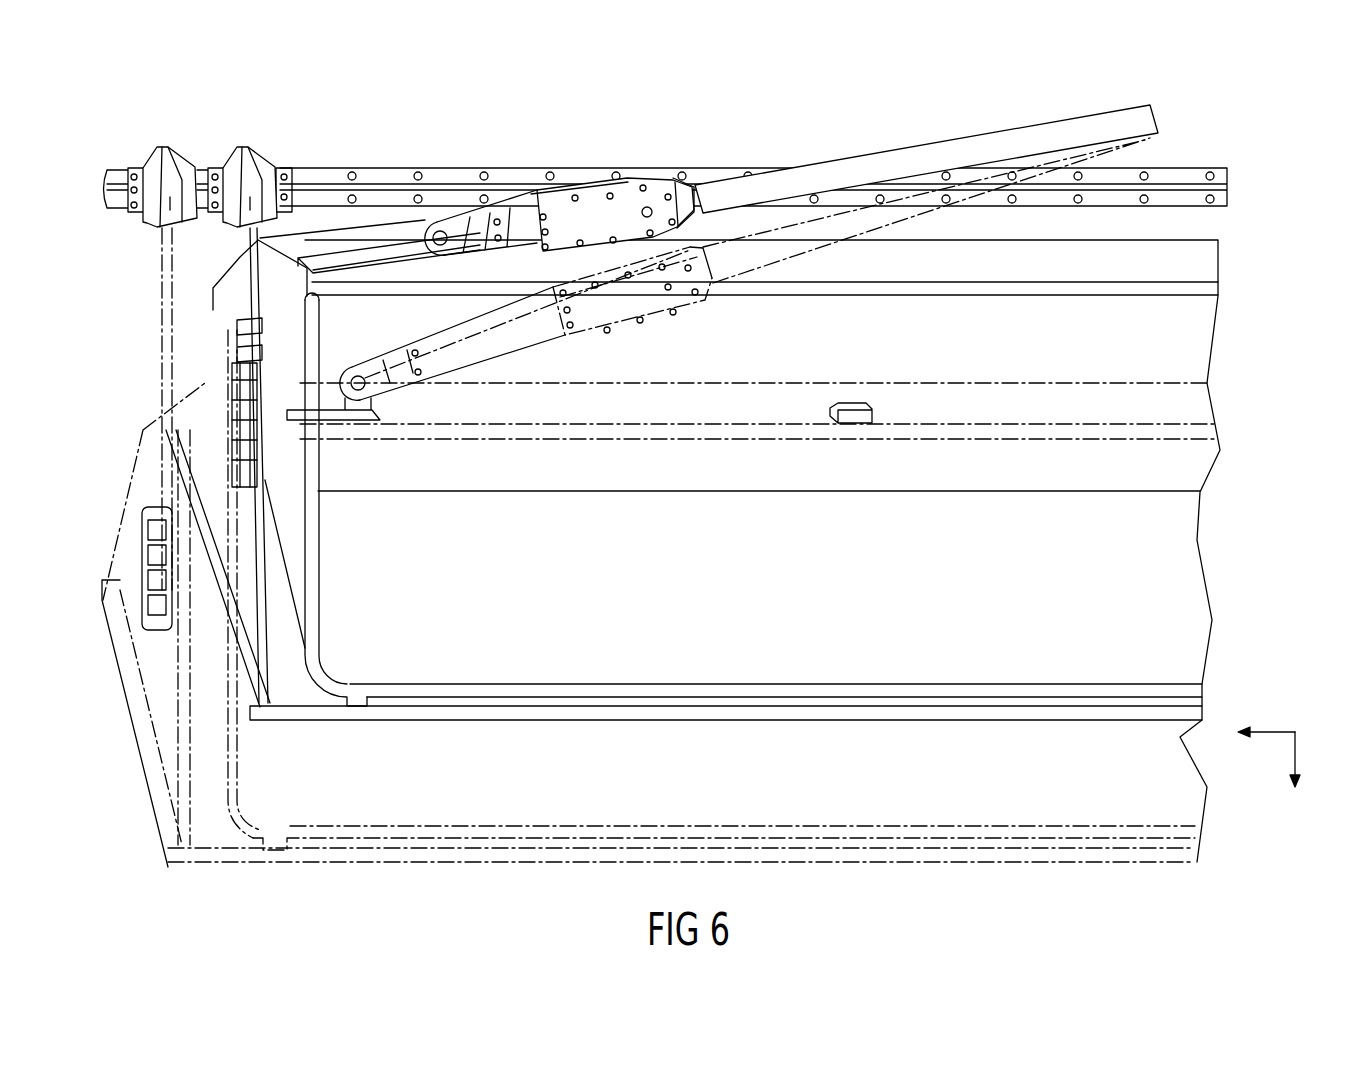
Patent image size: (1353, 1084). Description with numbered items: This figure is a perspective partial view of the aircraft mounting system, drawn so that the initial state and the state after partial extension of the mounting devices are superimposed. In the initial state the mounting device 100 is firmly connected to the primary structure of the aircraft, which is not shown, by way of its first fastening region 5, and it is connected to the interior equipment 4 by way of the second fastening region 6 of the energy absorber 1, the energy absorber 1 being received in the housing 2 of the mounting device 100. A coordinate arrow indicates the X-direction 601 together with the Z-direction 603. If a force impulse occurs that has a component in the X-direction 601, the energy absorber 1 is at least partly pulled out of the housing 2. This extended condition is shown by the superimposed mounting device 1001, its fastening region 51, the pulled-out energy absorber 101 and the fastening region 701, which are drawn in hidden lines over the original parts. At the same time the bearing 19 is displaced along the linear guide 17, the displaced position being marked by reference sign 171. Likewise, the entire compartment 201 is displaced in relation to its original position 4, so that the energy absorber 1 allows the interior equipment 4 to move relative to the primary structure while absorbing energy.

The displaced bearing 171 is at (143, 168).
The bearing 19 is at (227, 168).
The energy absorber 1 is at (513, 223).
The housing 2 is at (588, 207).
The mounting device 100 is at (682, 166).
The mounting device (extended state) 1001 is at (706, 244).
The first fastening region 5 is at (970, 152).
The linear guide 17 is at (1188, 175).
The fastening region (extended state) 51 is at (893, 218).
The second fastening region 6 is at (447, 240).
The interior equipment 4 is at (1197, 337).
The compartment 201 is at (1208, 430).
The energy absorber (extended state) 101 is at (517, 338).
The fastening region (extended state) 701 is at (367, 387).
The X-direction 601 is at (1278, 732).
The Z-direction 603 is at (1293, 758).